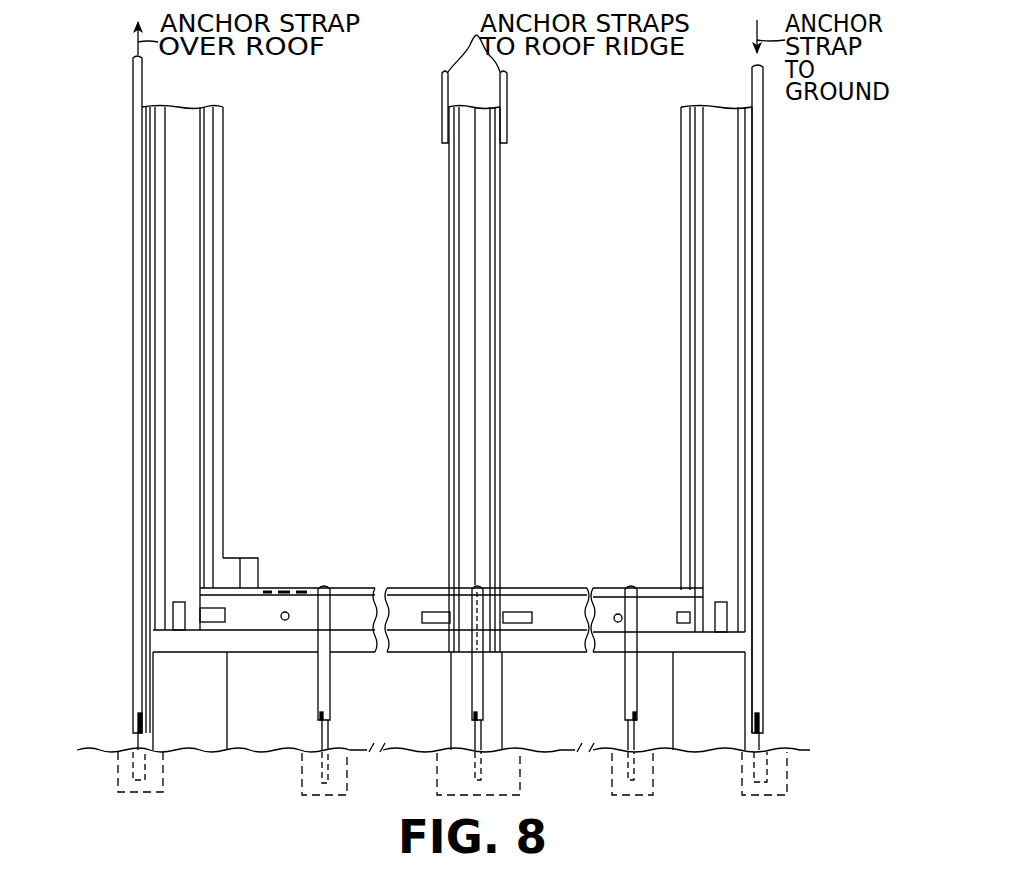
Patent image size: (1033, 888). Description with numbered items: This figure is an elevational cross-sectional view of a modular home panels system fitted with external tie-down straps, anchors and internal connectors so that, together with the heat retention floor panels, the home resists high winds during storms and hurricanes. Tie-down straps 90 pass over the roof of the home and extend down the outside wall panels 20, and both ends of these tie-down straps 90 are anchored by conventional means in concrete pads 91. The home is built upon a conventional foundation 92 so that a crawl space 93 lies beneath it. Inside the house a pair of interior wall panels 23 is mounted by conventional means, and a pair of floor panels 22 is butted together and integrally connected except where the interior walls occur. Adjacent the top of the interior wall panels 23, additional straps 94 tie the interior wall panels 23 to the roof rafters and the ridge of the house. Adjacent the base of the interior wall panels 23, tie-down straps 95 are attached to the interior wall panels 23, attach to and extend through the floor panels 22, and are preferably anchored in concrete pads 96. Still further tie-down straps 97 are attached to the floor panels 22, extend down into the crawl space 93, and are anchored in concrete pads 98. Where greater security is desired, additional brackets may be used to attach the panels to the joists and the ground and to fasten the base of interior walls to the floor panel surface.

The outside wall panels 20 is at (141, 181).
The floor panels 22 is at (285, 656).
The interior wall panels 23 is at (447, 192).
The tie-down straps 90 is at (137, 352).
The concrete pads 91 is at (118, 772).
The foundation 92 is at (198, 733).
The crawl space 93 is at (405, 724).
The straps 94 is at (442, 95).
The tie-down straps 95 is at (481, 587).
The concrete pads 96 is at (520, 782).
The tie down straps 97 is at (331, 690).
The concrete pads 98 is at (305, 790).